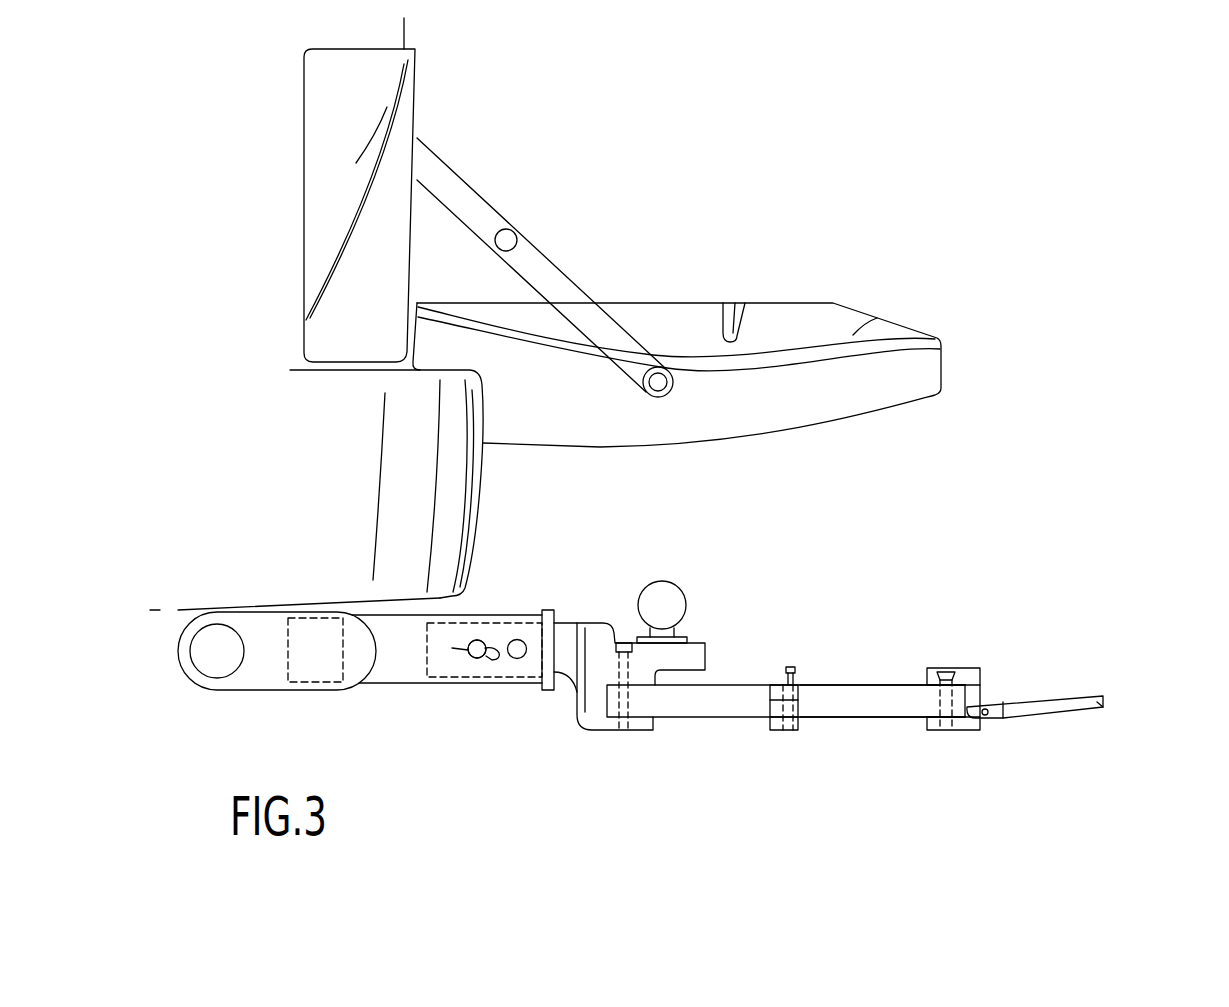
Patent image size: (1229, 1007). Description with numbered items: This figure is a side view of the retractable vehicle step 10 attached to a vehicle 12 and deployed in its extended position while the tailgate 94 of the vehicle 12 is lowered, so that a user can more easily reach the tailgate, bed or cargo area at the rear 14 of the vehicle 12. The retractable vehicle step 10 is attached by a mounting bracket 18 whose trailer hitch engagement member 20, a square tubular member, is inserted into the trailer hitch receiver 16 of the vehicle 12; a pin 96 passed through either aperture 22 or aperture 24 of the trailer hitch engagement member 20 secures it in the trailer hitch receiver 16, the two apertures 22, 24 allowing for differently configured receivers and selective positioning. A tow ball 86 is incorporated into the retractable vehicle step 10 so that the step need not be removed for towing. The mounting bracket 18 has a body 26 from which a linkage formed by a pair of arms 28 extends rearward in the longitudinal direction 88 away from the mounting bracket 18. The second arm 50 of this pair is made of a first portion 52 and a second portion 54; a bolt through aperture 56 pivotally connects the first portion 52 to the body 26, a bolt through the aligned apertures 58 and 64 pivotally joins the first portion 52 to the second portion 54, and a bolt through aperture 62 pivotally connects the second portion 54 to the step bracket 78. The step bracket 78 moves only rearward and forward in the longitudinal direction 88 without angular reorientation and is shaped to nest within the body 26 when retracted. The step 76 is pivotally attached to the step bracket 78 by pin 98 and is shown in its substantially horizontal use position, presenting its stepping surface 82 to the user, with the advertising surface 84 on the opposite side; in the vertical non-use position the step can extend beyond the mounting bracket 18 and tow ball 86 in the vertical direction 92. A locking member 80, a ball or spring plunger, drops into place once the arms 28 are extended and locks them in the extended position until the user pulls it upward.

The retractable vehicle step 10 is at (957, 570).
The vehicle 12 is at (407, 102).
The rear 14 is at (505, 507).
The trailer hitch receiver 16 is at (388, 675).
The mounting bracket 18 is at (577, 623).
The trailer hitch engagement member 20 is at (427, 647).
The aperture 22 is at (477, 660).
The aperture 24 is at (517, 660).
The body 26 is at (585, 743).
The pair of arms 28 is at (770, 650).
The second arm 50 is at (785, 750).
The first portion 52 is at (700, 708).
The second portion 54 is at (885, 710).
The aperture 56 is at (627, 705).
The aperture 58 is at (770, 712).
The aperture 62 is at (933, 672).
The aperture 64 is at (800, 695).
The step 76 is at (1100, 703).
The step bracket 78 is at (970, 670).
The locking member 80 is at (793, 667).
The stepping surface 82 is at (1064, 682).
The advertising surface 84 is at (1056, 728).
The tow ball 86 is at (652, 600).
The longitudinal direction 88 is at (926, 793).
The vertical direction 92 is at (1140, 650).
The tailgate 94 is at (930, 363).
The pin 96 is at (480, 638).
The pin 98 is at (987, 718).